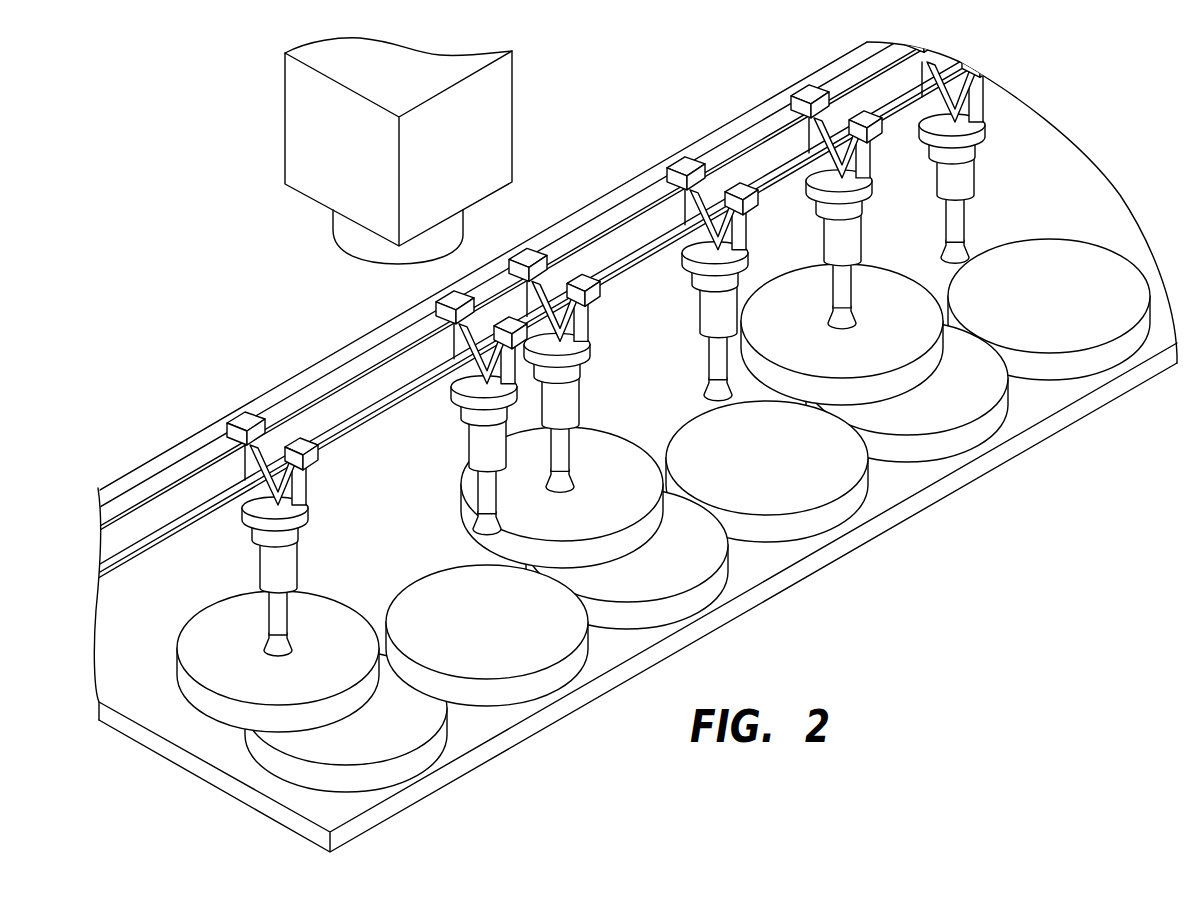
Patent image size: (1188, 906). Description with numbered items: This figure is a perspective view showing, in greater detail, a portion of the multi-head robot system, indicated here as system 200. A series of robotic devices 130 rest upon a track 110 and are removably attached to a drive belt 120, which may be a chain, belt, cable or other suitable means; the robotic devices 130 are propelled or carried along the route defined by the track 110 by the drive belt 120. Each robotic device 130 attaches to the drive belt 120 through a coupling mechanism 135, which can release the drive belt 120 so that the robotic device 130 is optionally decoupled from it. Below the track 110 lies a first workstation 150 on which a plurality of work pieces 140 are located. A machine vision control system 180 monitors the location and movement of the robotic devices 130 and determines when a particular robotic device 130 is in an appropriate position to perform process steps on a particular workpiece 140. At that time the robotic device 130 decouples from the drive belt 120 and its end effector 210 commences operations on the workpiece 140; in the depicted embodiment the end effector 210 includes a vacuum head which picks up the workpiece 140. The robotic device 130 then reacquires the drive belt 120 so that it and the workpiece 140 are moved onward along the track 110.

The multi-spindle machining system 200 is at (180, 113).
The machine vision control system 180 is at (498, 105).
The coupling mechanism 135 is at (700, 162).
The drive belt 120 is at (313, 392).
The track 110 is at (392, 403).
The robotic device 130 is at (285, 567).
The end effector 210 is at (958, 218).
The first workstation 150 is at (900, 483).
The workpiece 140 is at (683, 576).